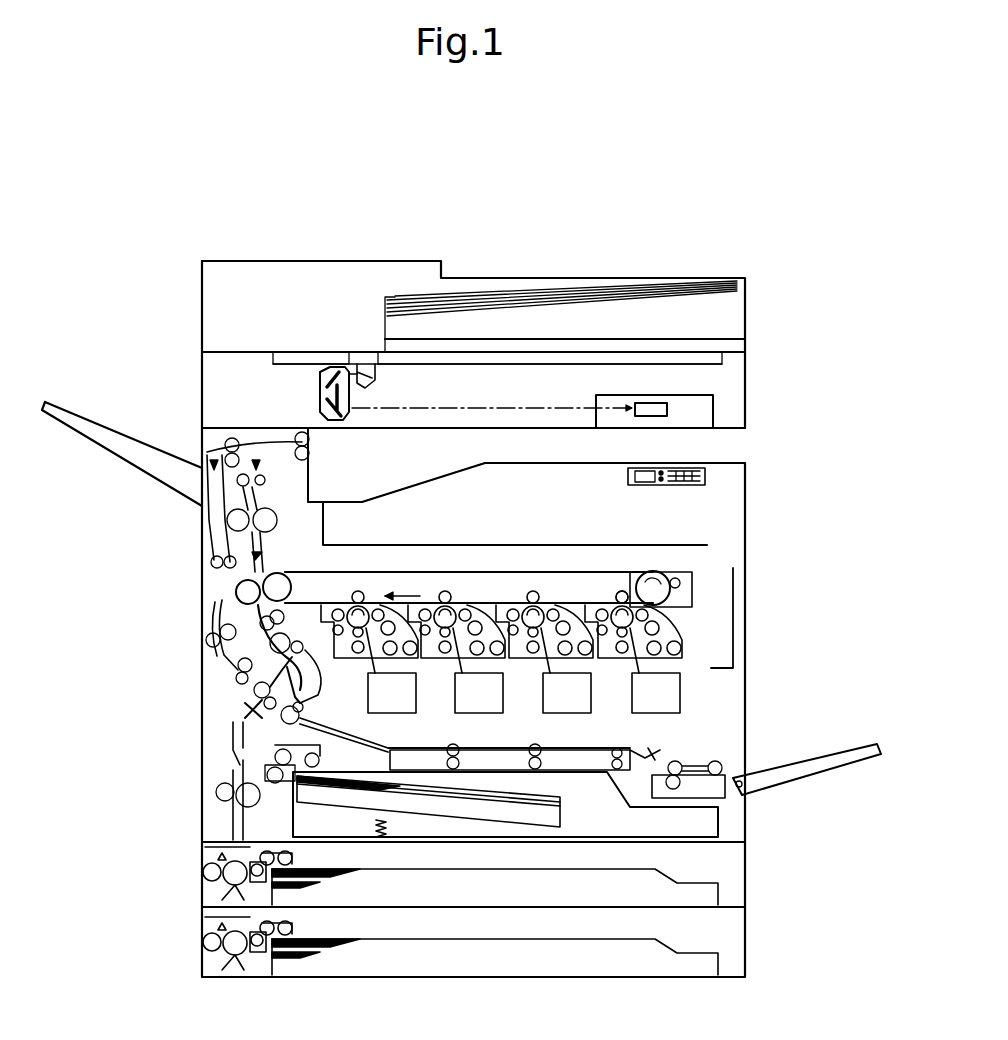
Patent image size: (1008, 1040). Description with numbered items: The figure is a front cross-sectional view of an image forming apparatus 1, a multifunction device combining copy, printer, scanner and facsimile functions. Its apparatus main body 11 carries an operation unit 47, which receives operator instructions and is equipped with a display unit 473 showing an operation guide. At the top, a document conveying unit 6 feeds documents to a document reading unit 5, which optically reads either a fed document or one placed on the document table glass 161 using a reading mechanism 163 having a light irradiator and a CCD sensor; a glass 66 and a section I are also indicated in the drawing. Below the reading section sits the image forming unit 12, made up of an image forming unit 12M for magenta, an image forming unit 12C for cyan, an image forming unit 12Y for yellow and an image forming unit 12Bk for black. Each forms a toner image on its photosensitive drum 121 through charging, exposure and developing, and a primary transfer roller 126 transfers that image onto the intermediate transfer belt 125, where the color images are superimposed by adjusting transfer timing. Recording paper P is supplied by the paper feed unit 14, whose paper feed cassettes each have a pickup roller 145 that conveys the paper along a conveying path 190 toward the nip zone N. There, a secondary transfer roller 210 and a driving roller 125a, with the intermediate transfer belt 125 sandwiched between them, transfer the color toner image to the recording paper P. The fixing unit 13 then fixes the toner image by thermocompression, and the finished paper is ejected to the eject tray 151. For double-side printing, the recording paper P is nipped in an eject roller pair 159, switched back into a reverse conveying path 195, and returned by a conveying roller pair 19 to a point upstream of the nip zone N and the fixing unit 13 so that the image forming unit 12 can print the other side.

The image forming apparatus 1 is at (826, 330).
The document reading unit 5 is at (180, 383).
The document conveying unit 6 is at (598, 258).
The apparatus main body 11 is at (750, 488).
The image forming unit 12 is at (712, 604).
The image forming unit for black 12Bk is at (370, 585).
The image forming unit for yellow 12Y is at (450, 580).
The image forming unit for cyan 12C is at (538, 582).
The image forming unit for magenta 12M is at (620, 582).
The fixing unit 13 is at (208, 522).
The paper feed unit 14 is at (724, 870).
The conveying roller pair 19 is at (305, 685).
The operation unit 47 is at (708, 487).
The contact glass 66 is at (656, 340).
The photosensitive drum 121 is at (620, 645).
The intermediate transfer belt 125 is at (645, 570).
The driving roller 125a is at (280, 580).
The primary transfer roller 126 is at (623, 590).
The pickup roller 145 is at (272, 930).
The eject tray 151 is at (344, 505).
The eject roller pair 159 is at (312, 437).
The document table glass 161 is at (608, 360).
The reading mechanism 163 is at (305, 397).
The conveying path 190 is at (224, 610).
The reverse conveying path 195 is at (225, 590).
The secondary transfer roller 210 is at (218, 624).
The display unit 473 is at (638, 465).
The nip zone N is at (213, 561).
The recording paper P is at (556, 798).
The image forming section I is at (706, 583).